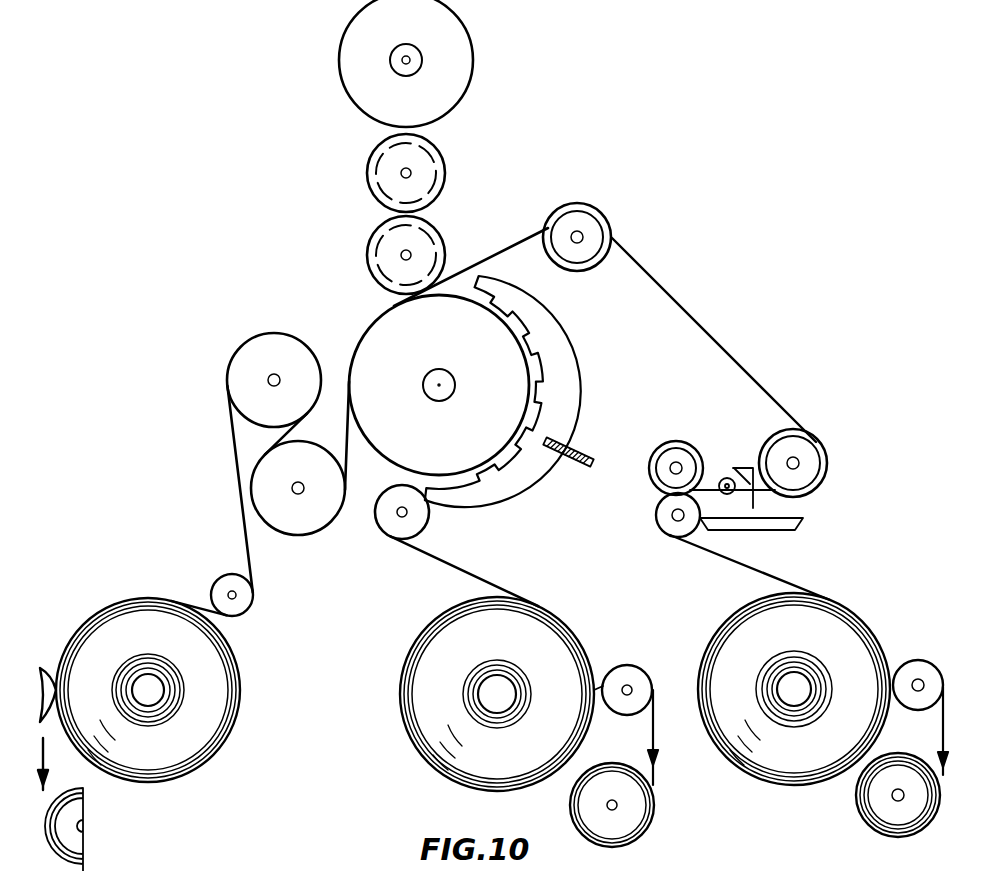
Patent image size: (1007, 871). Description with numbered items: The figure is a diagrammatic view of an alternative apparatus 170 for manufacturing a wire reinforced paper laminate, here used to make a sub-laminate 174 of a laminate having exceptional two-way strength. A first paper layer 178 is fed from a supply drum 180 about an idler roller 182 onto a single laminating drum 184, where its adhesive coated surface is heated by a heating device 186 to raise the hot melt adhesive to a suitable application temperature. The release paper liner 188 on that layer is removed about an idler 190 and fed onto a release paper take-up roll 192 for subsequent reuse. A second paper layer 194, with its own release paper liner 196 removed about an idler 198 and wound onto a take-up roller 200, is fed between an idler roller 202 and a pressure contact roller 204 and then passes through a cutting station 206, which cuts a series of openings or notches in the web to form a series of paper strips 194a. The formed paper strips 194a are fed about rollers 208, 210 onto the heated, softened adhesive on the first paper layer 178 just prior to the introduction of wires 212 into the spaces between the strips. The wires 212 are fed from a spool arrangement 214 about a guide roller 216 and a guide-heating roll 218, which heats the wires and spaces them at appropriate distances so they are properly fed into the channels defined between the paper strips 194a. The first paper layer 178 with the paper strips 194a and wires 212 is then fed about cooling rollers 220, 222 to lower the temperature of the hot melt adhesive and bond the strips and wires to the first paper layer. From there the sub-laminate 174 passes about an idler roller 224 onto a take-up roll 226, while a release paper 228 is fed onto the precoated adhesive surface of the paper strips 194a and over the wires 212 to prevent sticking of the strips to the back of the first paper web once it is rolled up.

The apparatus 170 is at (688, 208).
The sub-laminate 174 is at (238, 458).
The first paper layer 178 is at (465, 570).
The supply drum 180 is at (556, 622).
The idler roller 182 is at (413, 521).
The laminating drum 184 is at (468, 442).
The heating device 186 is at (549, 343).
The release paper liner 188 is at (655, 752).
The idler 190 is at (664, 636).
The release paper take-up roll 192 is at (644, 817).
The second paper layer 194 is at (784, 568).
The paper strips 194a is at (676, 302).
The release paper liner 196 is at (943, 738).
The idler 198 is at (912, 667).
The take-up roller 200 is at (883, 819).
The idler roller 202 is at (666, 525).
The pressure contact roller 204 is at (660, 445).
The cutting station 206 is at (738, 412).
The roller 208 is at (812, 440).
The roller 210 is at (599, 212).
The wires 212 is at (424, 215).
The spool arrangement 214 is at (455, 50).
The guide roller 216 is at (437, 156).
The guide-heating roll 218 is at (433, 240).
The cooling roller 220 is at (308, 520).
The cooling roller 222 is at (250, 348).
The idler roller 224 is at (243, 600).
The take-up roll 226 is at (230, 670).
The release paper 228 is at (45, 760).